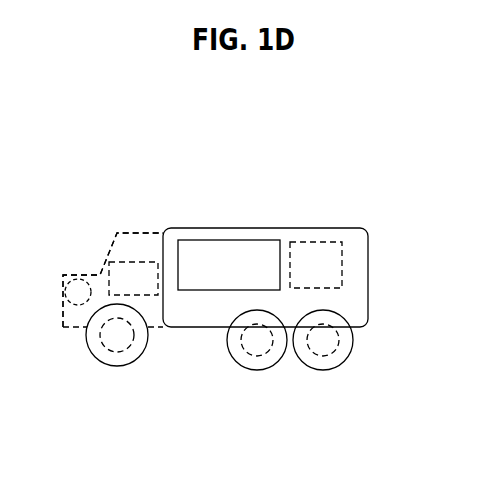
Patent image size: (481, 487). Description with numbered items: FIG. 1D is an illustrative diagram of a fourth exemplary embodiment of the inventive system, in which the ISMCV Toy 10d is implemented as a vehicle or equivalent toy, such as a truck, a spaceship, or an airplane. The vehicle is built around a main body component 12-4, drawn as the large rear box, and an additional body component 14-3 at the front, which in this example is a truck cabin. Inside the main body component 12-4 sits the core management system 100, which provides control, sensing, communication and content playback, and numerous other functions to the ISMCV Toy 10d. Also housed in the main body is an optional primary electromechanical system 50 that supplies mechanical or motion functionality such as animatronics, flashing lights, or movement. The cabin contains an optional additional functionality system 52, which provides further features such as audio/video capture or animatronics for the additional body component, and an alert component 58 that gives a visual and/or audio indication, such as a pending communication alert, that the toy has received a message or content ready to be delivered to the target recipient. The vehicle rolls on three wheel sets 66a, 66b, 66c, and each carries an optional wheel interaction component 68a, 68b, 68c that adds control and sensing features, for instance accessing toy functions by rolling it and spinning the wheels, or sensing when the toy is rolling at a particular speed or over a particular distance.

The ISMCV Toy 10d is at (317, 170).
The additional body component 14-3 is at (116, 233).
The additional functionality system 52 is at (147, 263).
The alert component 58 is at (78, 282).
The main body component 12-4 is at (202, 327).
The core management system 100 is at (197, 240).
The primary electromechanical system 50 is at (315, 242).
The wheel set 66a is at (86, 341).
The wheel interaction component 68a is at (105, 347).
The wheel set 66b is at (262, 370).
The wheel interaction component 68b is at (263, 352).
The wheel set 66c is at (345, 362).
The wheel interaction component 68c is at (338, 342).